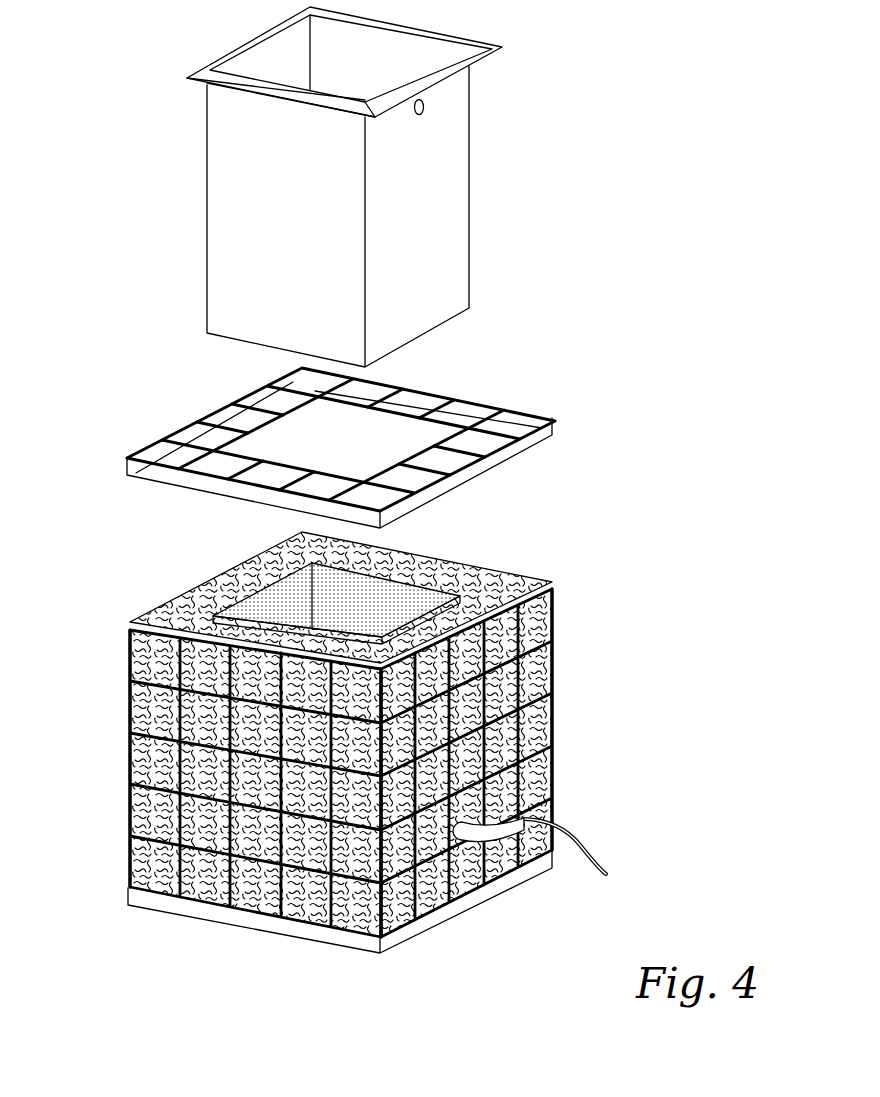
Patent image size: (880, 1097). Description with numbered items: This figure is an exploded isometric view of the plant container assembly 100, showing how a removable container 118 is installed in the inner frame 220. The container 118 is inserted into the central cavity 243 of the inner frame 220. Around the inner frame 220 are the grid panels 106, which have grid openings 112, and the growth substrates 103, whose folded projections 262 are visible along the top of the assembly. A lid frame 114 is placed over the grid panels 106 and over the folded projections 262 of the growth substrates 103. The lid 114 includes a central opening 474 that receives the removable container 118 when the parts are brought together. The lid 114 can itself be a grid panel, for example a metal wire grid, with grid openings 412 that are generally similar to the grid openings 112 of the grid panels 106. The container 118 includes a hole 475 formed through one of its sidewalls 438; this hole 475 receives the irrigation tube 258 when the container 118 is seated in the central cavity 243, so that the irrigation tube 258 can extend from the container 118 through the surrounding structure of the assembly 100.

The container assembly 100 is at (672, 84).
The container 118 is at (440, 174).
The sidewall 438 is at (448, 244).
The hole 475 is at (425, 104).
The lid frame 114 is at (487, 403).
The central opening 474 is at (242, 445).
The grid openings 412 is at (413, 483).
The growth substrates 103 is at (540, 638).
The grid panels 106 is at (553, 687).
The grid openings 112 is at (520, 747).
The inner frame 220 is at (400, 600).
The central cavity 243 is at (323, 607).
The folded projections 262 is at (210, 580).
The irrigation tube 258 is at (587, 867).